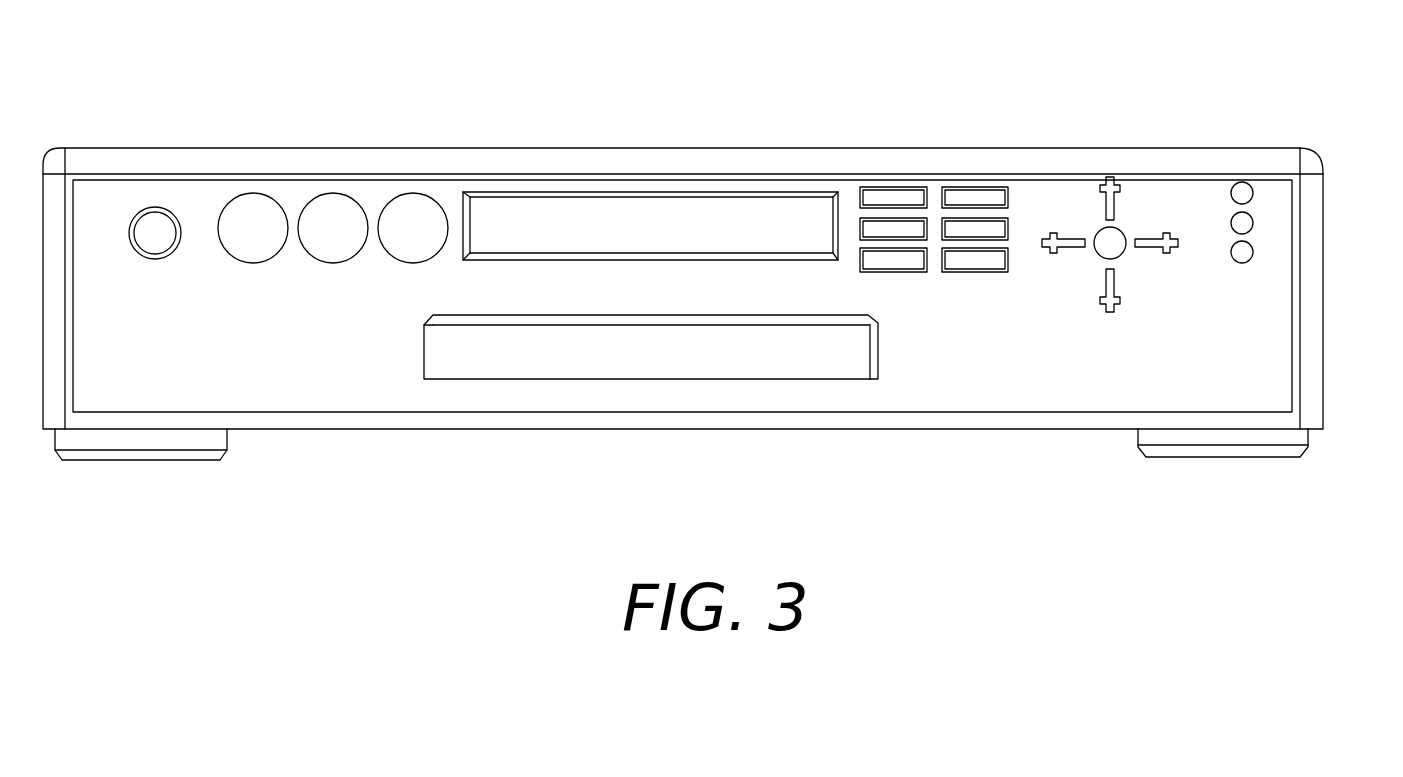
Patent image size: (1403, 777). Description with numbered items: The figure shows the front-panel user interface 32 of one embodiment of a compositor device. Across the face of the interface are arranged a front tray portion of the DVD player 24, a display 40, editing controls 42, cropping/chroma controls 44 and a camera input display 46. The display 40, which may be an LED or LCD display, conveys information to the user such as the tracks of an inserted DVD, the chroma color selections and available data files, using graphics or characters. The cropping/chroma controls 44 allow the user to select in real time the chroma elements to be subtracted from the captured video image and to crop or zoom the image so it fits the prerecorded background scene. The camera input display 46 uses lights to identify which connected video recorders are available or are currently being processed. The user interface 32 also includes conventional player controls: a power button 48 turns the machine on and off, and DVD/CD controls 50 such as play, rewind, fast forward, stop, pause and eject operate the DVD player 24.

The user interface 32 is at (1053, 147).
The power button 48 is at (167, 204).
The editing controls 42 is at (413, 228).
The display 40 is at (725, 190).
The DVD/CD controls 50 is at (988, 262).
The cropping/chroma controls 44 is at (1066, 292).
The camera input display 46 is at (1250, 192).
The DVD player 24 is at (552, 380).